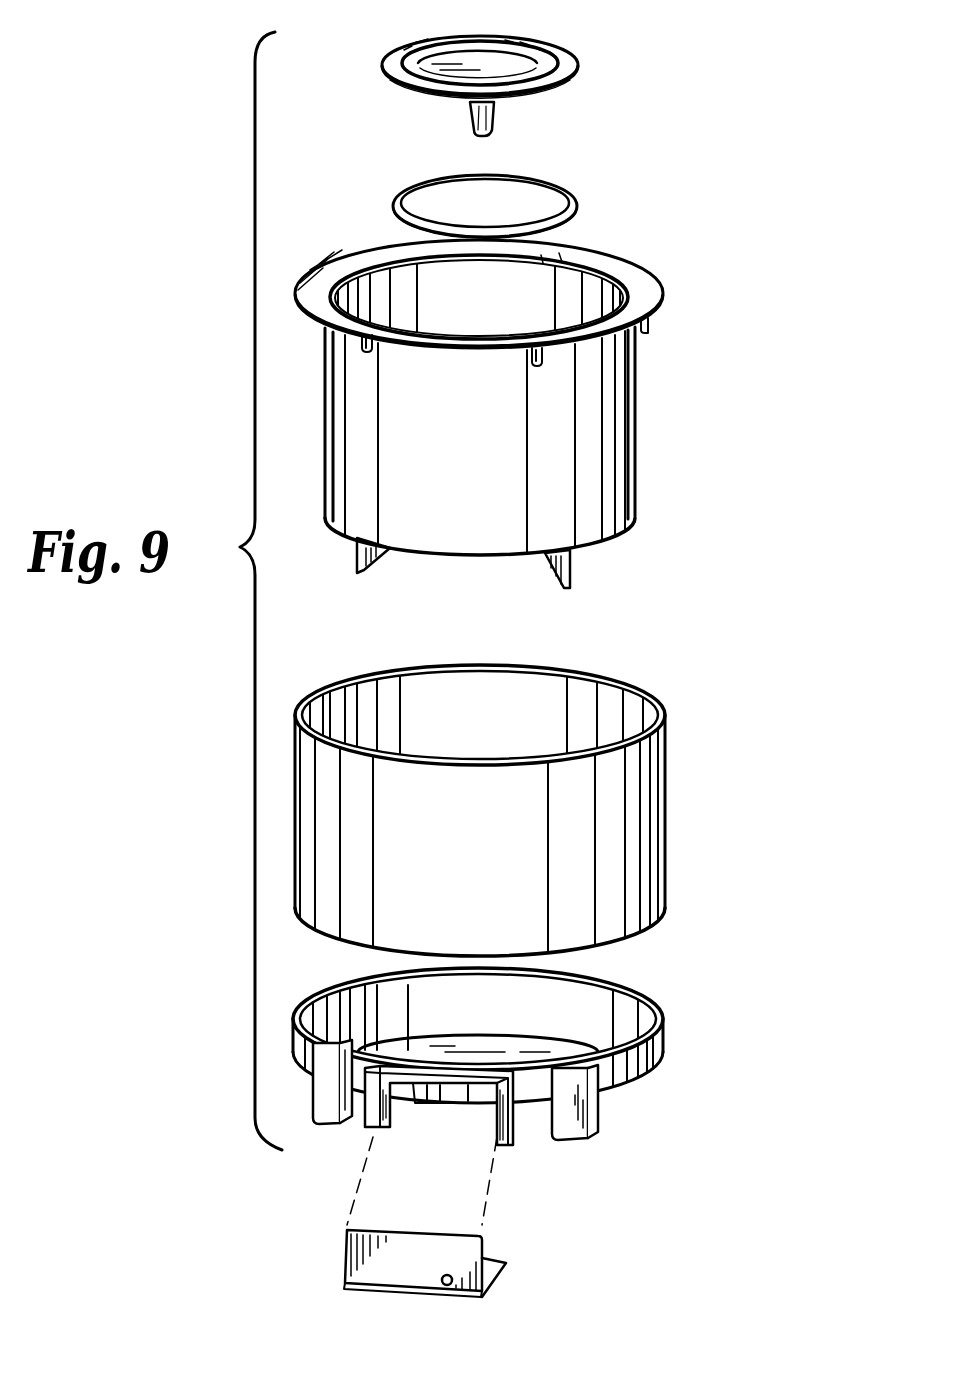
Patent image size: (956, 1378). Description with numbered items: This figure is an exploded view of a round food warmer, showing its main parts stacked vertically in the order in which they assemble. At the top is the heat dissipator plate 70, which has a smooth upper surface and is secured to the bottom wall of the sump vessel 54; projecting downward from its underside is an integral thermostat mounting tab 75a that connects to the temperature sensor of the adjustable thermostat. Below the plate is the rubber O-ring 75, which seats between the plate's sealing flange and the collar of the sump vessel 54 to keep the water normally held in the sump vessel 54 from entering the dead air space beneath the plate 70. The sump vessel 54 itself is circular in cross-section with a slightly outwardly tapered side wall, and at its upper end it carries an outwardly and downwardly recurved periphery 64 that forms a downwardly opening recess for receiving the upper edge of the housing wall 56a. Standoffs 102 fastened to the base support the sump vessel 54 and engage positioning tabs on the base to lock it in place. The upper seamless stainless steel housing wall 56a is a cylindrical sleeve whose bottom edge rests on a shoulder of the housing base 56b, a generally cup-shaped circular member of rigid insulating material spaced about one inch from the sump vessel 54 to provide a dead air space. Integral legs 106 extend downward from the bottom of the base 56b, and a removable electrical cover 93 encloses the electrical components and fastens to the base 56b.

The heat dissipator plate 70 is at (405, 48).
The thermostat mounting tab 75a is at (470, 121).
The rubber O-ring 75 is at (565, 191).
The recurved periphery 64 is at (650, 272).
The sump vessel 54 is at (328, 397).
The standoffs 102 is at (355, 575).
The upper housing wall 56a is at (665, 838).
The housing base 56b is at (656, 1068).
The legs 106 is at (327, 1115).
The electrical cover 93 is at (428, 1244).